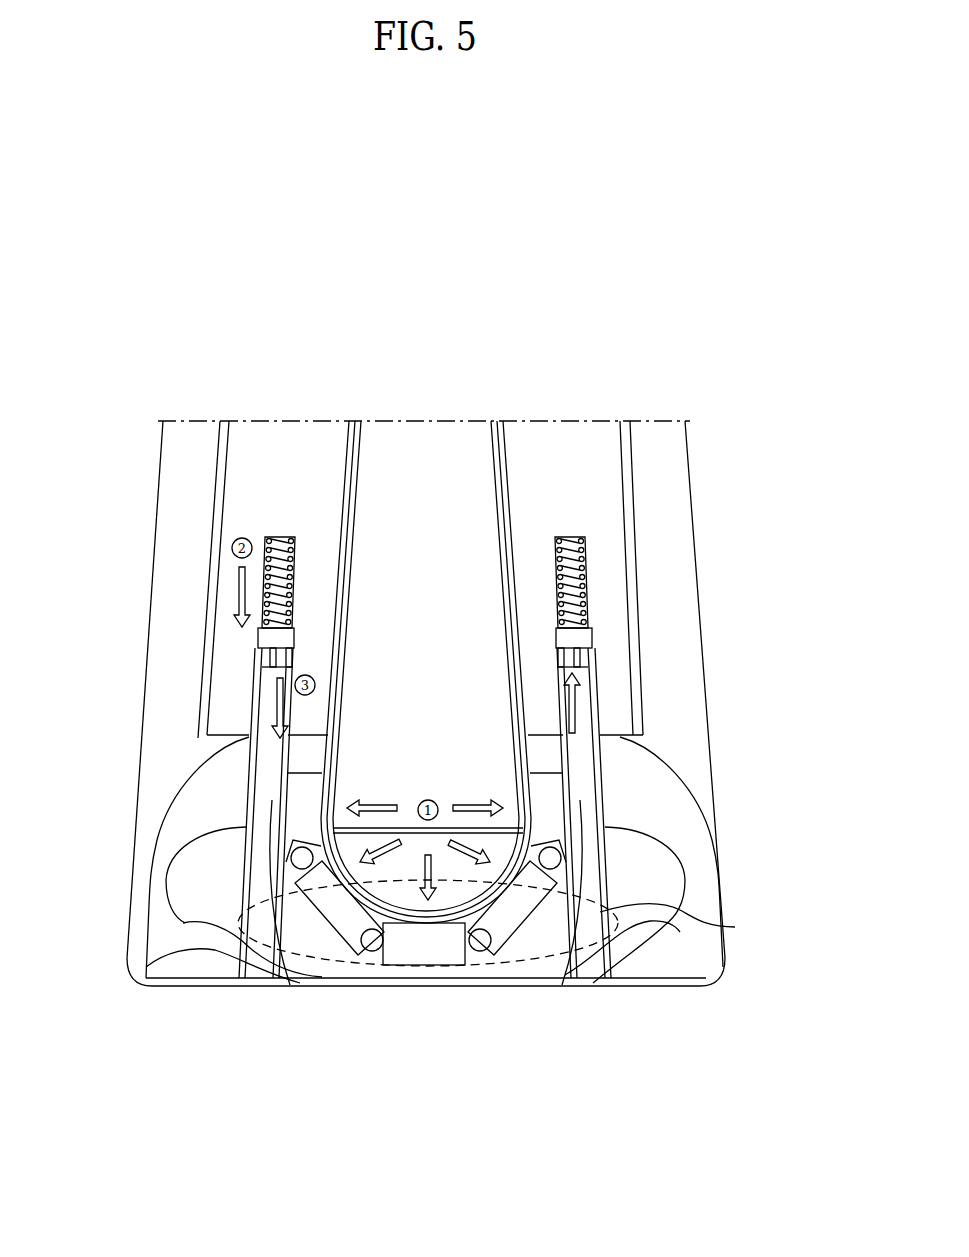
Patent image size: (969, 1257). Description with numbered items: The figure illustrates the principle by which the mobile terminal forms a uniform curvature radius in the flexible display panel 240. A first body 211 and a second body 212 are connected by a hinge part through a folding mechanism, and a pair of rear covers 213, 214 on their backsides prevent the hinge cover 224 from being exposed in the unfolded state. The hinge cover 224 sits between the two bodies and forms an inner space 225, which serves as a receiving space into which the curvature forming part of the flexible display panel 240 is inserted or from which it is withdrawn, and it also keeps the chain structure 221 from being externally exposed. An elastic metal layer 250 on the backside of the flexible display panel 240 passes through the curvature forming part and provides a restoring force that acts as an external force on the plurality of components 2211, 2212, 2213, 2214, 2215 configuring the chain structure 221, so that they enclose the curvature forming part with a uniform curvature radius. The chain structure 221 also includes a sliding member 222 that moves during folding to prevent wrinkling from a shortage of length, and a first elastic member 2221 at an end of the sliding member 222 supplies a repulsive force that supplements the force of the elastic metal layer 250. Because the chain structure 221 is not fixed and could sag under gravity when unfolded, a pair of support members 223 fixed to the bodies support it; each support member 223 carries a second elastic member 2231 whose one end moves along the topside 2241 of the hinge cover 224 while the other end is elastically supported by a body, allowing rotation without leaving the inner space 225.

The first body 211 is at (258, 457).
The second body 212 is at (555, 457).
The rear cover 213 is at (192, 457).
The rear cover 214 is at (676, 457).
The chain structure 221 is at (449, 1001).
The component of the chain structure 2211 is at (337, 900).
The component of the chain structure 2212 is at (377, 933).
The component of the chain structure 2213 is at (445, 957).
The component of the chain structure 2214 is at (505, 917).
The component of the chain structure 2215 is at (540, 998).
The sliding member 222 is at (267, 637).
The first elastic member 2221 is at (270, 597).
The second elastic member 2231 is at (263, 660).
The support member 223 is at (297, 893).
The hinge cover 224 is at (148, 967).
The topside of the hinge cover 2241 is at (597, 955).
The inner space 225 is at (735, 927).
The flexible display panel 240 is at (357, 425).
The elastic metal layer 250 is at (352, 425).